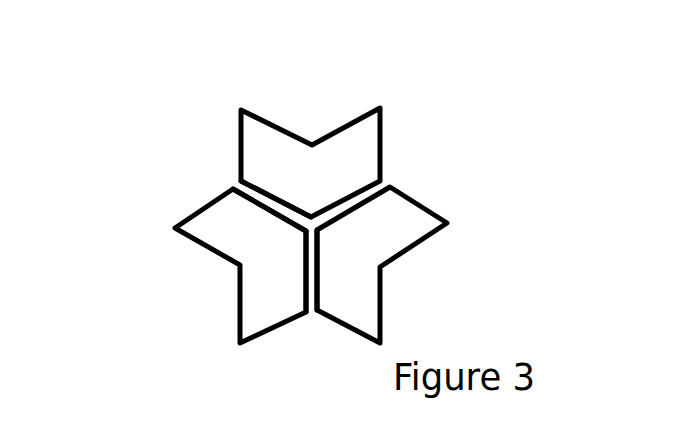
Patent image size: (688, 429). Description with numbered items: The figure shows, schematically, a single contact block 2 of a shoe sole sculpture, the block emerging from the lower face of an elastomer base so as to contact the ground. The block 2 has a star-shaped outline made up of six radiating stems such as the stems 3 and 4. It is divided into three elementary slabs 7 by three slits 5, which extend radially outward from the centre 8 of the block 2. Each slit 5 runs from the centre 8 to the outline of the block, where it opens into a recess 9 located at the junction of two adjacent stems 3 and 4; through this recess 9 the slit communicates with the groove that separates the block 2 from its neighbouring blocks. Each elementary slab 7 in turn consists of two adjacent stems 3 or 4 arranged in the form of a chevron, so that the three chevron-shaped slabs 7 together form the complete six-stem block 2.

The contact block 2 is at (313, 196).
The stem 3 is at (278, 135).
The stem 4 is at (423, 228).
The slit 5 is at (292, 216).
The elementary slab 7 is at (225, 294).
The centre of the block 8 is at (335, 247).
The recess 9 is at (221, 183).